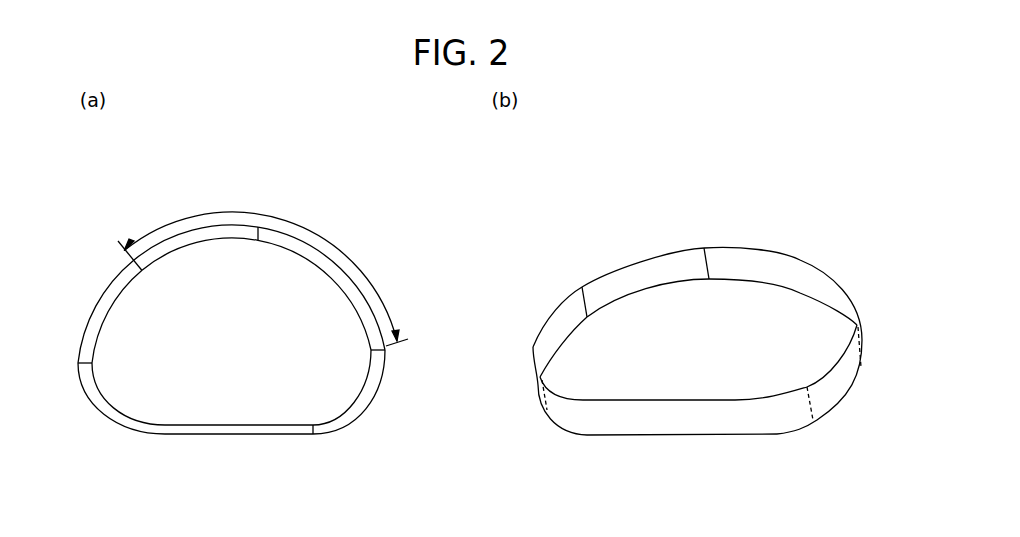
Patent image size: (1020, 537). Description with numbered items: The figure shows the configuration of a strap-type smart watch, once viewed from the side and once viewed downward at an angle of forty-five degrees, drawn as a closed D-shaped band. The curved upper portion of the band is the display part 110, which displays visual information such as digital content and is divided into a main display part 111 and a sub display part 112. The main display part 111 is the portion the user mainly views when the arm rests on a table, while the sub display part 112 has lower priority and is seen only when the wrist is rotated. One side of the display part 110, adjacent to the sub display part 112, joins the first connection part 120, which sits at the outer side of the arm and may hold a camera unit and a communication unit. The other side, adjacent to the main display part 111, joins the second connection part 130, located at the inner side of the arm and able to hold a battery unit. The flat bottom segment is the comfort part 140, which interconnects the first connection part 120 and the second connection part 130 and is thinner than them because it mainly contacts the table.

The display part 110 is at (262, 213).
The main display part 111 is at (325, 262).
The sub display part 112 is at (202, 238).
The first connection part 120 is at (103, 290).
The second connection part 130 is at (375, 397).
The comfort part 140 is at (213, 436).